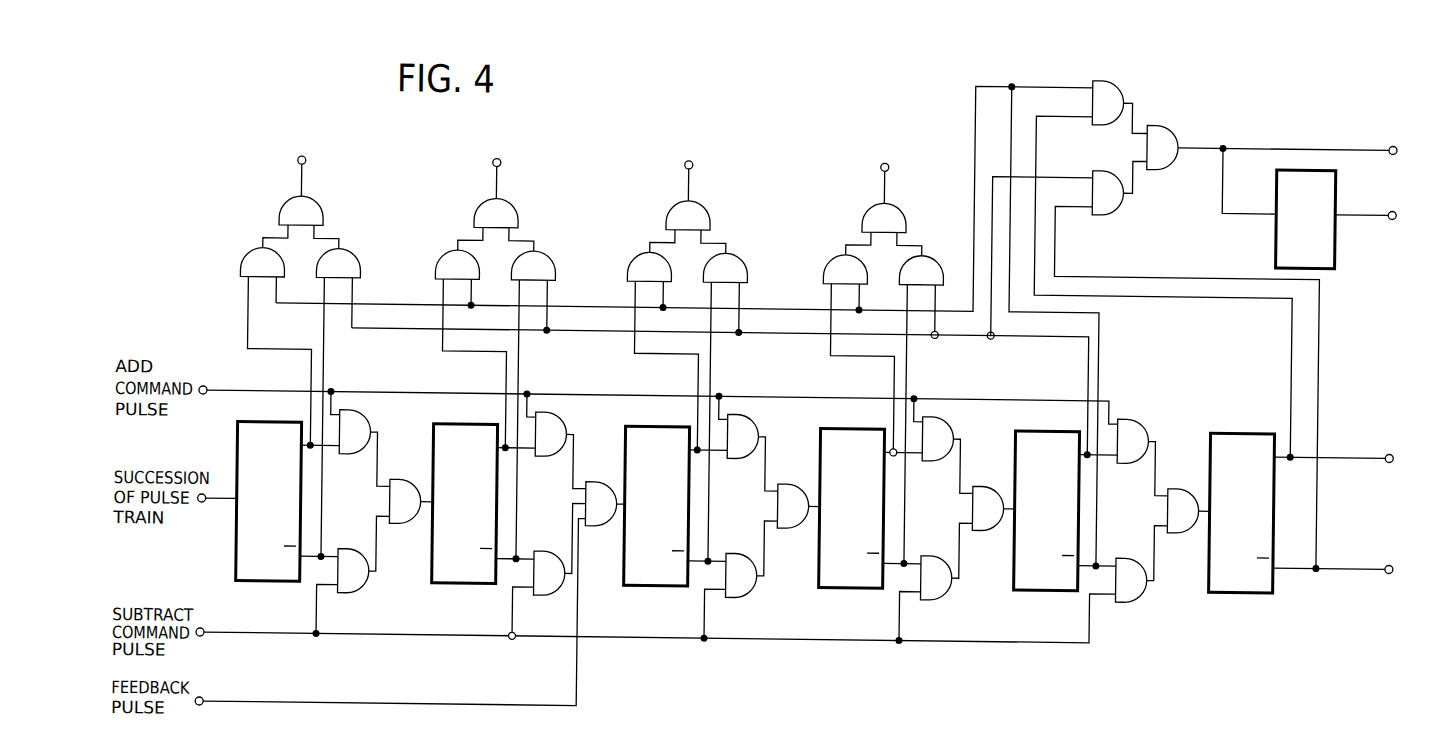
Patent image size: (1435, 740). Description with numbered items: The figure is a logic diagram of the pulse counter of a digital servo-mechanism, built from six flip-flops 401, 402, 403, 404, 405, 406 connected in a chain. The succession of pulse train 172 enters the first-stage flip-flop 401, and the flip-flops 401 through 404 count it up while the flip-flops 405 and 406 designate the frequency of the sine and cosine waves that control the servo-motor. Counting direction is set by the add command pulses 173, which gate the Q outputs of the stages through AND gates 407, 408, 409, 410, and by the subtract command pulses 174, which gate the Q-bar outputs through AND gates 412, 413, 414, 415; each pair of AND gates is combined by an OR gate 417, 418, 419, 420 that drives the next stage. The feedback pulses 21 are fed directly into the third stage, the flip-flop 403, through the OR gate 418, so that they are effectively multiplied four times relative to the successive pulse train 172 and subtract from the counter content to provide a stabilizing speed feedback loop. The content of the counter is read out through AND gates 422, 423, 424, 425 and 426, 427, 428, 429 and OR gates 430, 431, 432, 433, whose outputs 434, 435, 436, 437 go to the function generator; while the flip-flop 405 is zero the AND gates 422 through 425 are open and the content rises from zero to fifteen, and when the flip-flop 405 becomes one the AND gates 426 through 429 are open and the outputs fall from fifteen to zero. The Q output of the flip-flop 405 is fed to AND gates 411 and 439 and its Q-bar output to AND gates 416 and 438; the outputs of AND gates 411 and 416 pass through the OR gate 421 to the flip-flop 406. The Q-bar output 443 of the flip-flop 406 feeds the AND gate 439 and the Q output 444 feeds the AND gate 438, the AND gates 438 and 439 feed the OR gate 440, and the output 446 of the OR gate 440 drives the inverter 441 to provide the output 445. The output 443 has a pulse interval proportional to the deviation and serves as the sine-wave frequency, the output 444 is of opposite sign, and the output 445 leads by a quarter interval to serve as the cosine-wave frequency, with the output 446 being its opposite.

The feedback pulses 21 is at (207, 704).
The successive pulse train 172 is at (207, 501).
The add command pulses 173 is at (237, 390).
The subtract command pulses 174 is at (212, 634).
The flip-flop 401 is at (270, 580).
The flip-flop 402 is at (466, 580).
The flip-flop 403 is at (659, 580).
The flip-flop 404 is at (854, 580).
The flip-flop 405 is at (1048, 580).
The flip-flop 406 is at (1243, 580).
The AND gate 407 is at (370, 417).
The AND gate 408 is at (566, 417).
The AND gate 409 is at (758, 417).
The AND gate 410 is at (953, 417).
The AND gate 411 is at (1148, 417).
The AND gate 412 is at (355, 547).
The AND gate 413 is at (551, 547).
The AND gate 414 is at (743, 547).
The AND gate 415 is at (938, 547).
The AND gate 416 is at (1133, 547).
The OR gate 417 is at (403, 477).
The OR gate 418 is at (597, 477).
The OR gate 419 is at (789, 477).
The OR gate 420 is at (984, 477).
The OR gate 421 is at (1179, 477).
The AND gate 422 is at (243, 257).
The AND gate 423 is at (438, 256).
The AND gate 424 is at (630, 256).
The AND gate 425 is at (822, 256).
The AND gate 426 is at (359, 272).
The AND gate 427 is at (554, 272).
The AND gate 428 is at (746, 272).
The AND gate 429 is at (936, 252).
The OR gate 430 is at (321, 212).
The OR gate 431 is at (516, 212).
The OR gate 432 is at (708, 212).
The OR gate 433 is at (904, 212).
The output 434 is at (303, 159).
The output 435 is at (498, 159).
The output 436 is at (690, 159).
The output 437 is at (886, 159).
The AND gate 438 is at (1113, 72).
The AND gate 439 is at (1108, 203).
The OR gate 440 is at (1163, 120).
The inverter 441 is at (1319, 229).
The output Q-bar 443 is at (1392, 551).
The output Q 444 is at (1393, 431).
The output 445 is at (1394, 205).
The output 446 is at (1393, 140).